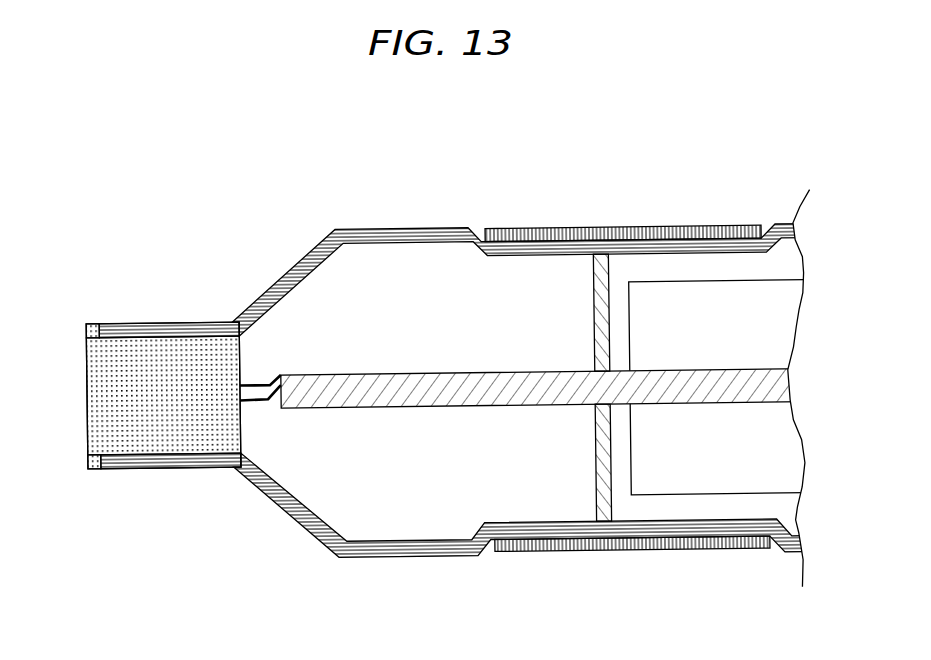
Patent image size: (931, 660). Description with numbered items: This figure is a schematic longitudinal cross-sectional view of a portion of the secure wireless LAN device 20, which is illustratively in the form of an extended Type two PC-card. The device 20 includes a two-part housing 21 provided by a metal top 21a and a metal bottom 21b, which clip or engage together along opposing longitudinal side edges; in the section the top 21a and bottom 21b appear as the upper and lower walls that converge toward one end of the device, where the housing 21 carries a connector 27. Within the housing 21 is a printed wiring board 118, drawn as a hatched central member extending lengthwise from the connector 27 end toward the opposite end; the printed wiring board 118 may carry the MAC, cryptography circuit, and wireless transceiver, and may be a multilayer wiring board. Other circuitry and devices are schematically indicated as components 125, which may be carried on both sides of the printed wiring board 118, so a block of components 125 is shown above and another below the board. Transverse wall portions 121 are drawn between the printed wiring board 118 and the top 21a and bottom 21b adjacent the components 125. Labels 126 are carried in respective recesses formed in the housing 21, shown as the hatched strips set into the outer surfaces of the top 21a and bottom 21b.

The secure wireless LAN device 20 is at (646, 160).
The housing 21 is at (409, 568).
The metal top 21a is at (290, 270).
The metal bottom 21b is at (292, 515).
The connector 27 is at (113, 394).
The printed wiring board 118 is at (402, 391).
The support wall 121 is at (595, 310).
The components 125 is at (771, 329).
The labels 126 is at (702, 229).